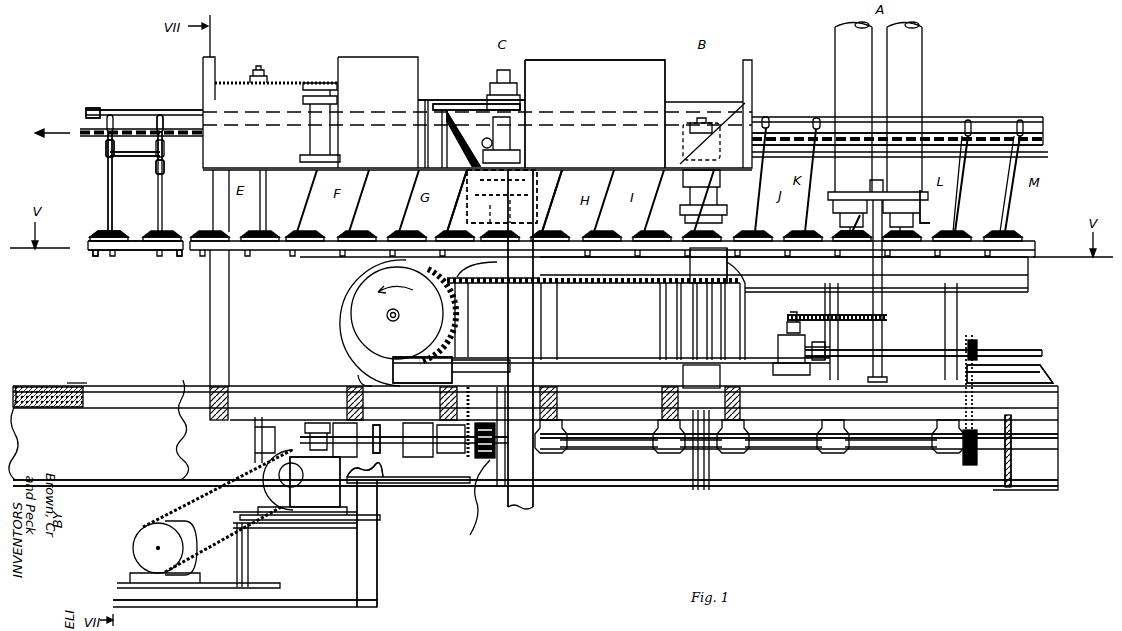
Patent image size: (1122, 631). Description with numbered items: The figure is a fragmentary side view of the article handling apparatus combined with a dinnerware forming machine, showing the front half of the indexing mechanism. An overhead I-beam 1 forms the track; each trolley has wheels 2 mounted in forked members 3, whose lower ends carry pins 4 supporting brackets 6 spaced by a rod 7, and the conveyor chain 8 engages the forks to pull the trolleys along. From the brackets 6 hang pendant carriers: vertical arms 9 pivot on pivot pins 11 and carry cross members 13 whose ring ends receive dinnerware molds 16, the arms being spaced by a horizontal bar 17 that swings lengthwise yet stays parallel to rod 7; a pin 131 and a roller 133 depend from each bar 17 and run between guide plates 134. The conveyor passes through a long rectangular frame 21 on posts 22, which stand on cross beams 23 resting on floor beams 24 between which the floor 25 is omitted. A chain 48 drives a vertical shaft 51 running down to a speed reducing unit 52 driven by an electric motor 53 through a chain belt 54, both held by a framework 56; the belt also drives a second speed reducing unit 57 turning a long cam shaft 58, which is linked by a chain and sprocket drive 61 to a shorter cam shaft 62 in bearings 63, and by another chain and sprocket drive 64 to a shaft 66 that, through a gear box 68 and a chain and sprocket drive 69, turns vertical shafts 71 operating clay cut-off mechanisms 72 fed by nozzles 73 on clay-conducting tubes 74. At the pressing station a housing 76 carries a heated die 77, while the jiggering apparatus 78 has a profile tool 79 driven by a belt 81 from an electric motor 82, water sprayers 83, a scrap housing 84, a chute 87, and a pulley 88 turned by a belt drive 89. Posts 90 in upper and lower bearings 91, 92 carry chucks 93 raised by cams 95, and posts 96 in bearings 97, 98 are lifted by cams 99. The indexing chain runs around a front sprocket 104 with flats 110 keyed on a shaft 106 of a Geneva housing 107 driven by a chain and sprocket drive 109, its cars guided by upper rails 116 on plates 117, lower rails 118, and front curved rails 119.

The I-beam 1 is at (135, 111).
The wheels 2 is at (98, 108).
The forked members 3 is at (166, 118).
The pins 4 is at (164, 140).
The brackets 6 is at (105, 148).
The rod 7 is at (136, 155).
The conveyor chain 8 is at (1044, 140).
The vertical arms 9 is at (107, 185).
The pivot pins 11 is at (164, 162).
The cross members 13 is at (145, 251).
The dinnerware molds 16 is at (102, 230).
The horizontal bar 17 is at (135, 240).
The frame 21 is at (578, 62).
The posts 22 is at (558, 308).
The cross beams 23 is at (741, 402).
The floor beams 24 is at (155, 470).
The floor 25 is at (40, 386).
The chain 48 is at (270, 82).
The vertical shaft 51 is at (322, 82).
The speed reducing unit 52 is at (327, 482).
The electric motor 53 is at (185, 530).
The chain belt 54 is at (205, 495).
The framework 56 is at (378, 571).
The speed reducing unit 57 is at (254, 425).
The cam shaft 58 is at (392, 446).
The chain and sprocket drive 61 is at (478, 460).
The cam shaft 62 is at (620, 446).
The bearings 63 is at (745, 440).
The chain and sprocket drive 64 is at (973, 356).
The shaft 66 is at (1020, 352).
The gear box 68 is at (778, 350).
The chain and sprocket drive 69 is at (815, 316).
The vertical shafts 71 is at (883, 305).
The clay cut-off mechanisms 72 is at (928, 206).
The nozzles 73 is at (840, 236).
The clay-conducting tubes 74 is at (914, 68).
The housing 76 is at (689, 180).
The heated die 77 is at (723, 212).
The jiggering apparatus 78 is at (528, 92).
The profile tool 79 is at (551, 214).
The belt 81 is at (498, 78).
The electric motor 82 is at (462, 135).
The water sprayers 83 is at (483, 205).
The housing 84 is at (446, 220).
The chute 87 is at (534, 496).
The pulley 88 is at (540, 193).
The belt drive 89 is at (432, 100).
The posts 90 is at (696, 323).
The upper bearings 91 is at (688, 262).
The lower bearings 92 is at (682, 375).
The chucks 93 is at (729, 264).
The cams 95 is at (701, 491).
The posts 96 is at (505, 316).
The upper bearings 97 is at (470, 282).
The lower bearings 98 is at (468, 372).
The cams 99 is at (470, 535).
The front sprocket 104 is at (354, 313).
The shaft 106 is at (393, 322).
The housing 107 is at (356, 376).
The chain and sprocket drive 109 is at (440, 401).
The flats 110 is at (450, 334).
The upper rails 116 is at (1030, 270).
The plates 117 is at (1030, 290).
The lower rails 118 is at (1030, 371).
The front curved rails 119 is at (333, 292).
The pin 131 is at (95, 257).
The roller 133 is at (179, 257).
The guide plates 134 is at (1030, 258).